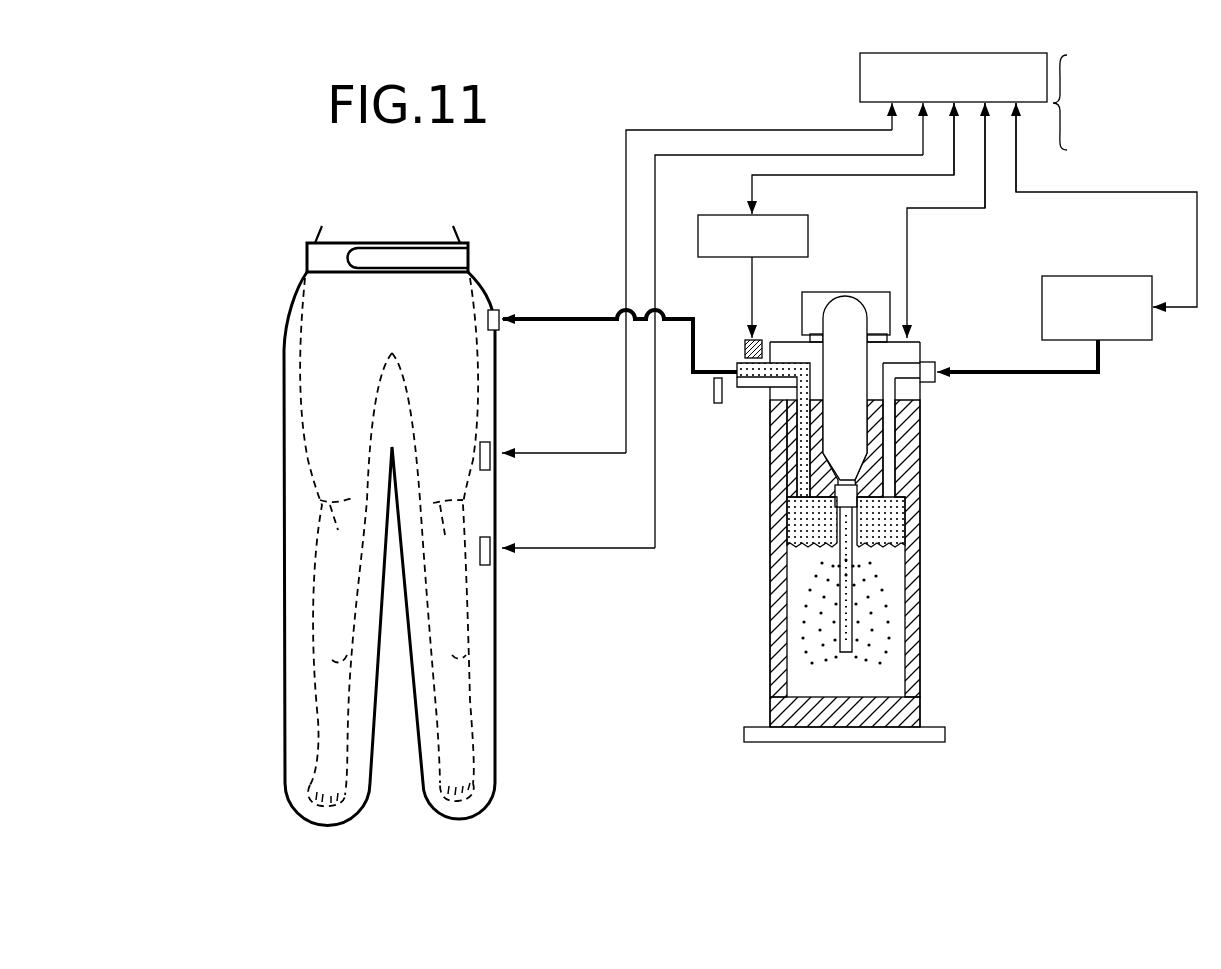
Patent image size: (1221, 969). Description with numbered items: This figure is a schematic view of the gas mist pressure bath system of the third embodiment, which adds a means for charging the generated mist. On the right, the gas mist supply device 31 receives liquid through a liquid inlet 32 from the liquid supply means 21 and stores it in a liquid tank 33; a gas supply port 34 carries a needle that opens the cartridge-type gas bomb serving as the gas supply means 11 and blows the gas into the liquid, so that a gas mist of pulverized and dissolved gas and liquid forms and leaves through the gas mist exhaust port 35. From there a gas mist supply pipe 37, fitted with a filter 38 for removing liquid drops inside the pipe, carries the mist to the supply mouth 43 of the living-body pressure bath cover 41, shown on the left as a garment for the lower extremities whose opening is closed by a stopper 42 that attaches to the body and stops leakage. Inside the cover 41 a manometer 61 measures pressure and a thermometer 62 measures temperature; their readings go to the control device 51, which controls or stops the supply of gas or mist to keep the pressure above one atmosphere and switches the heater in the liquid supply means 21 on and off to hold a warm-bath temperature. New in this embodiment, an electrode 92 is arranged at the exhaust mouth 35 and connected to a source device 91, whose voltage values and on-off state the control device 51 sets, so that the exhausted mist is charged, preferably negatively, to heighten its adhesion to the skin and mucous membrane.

The gas supply means 11 is at (860, 448).
The liquid supply means 21 is at (1112, 276).
The gas mist supply device 31 is at (940, 303).
The liquid inlet 32 is at (936, 361).
The liquid tank 33 is at (908, 644).
The gas supply port 34 is at (872, 503).
The gas mist exhaust port 35 is at (751, 395).
The gas mist supply pipe 37 is at (690, 310).
The filter 38 is at (718, 406).
The living-body pressure bath cover 41 is at (281, 263).
The stopper 42 is at (468, 248).
The supply mouth 43 is at (492, 308).
The control device 51 is at (860, 72).
The manometer 61 is at (492, 441).
The thermometer 62 is at (492, 536).
The source device 91 is at (810, 225).
The electrode 92 is at (746, 341).